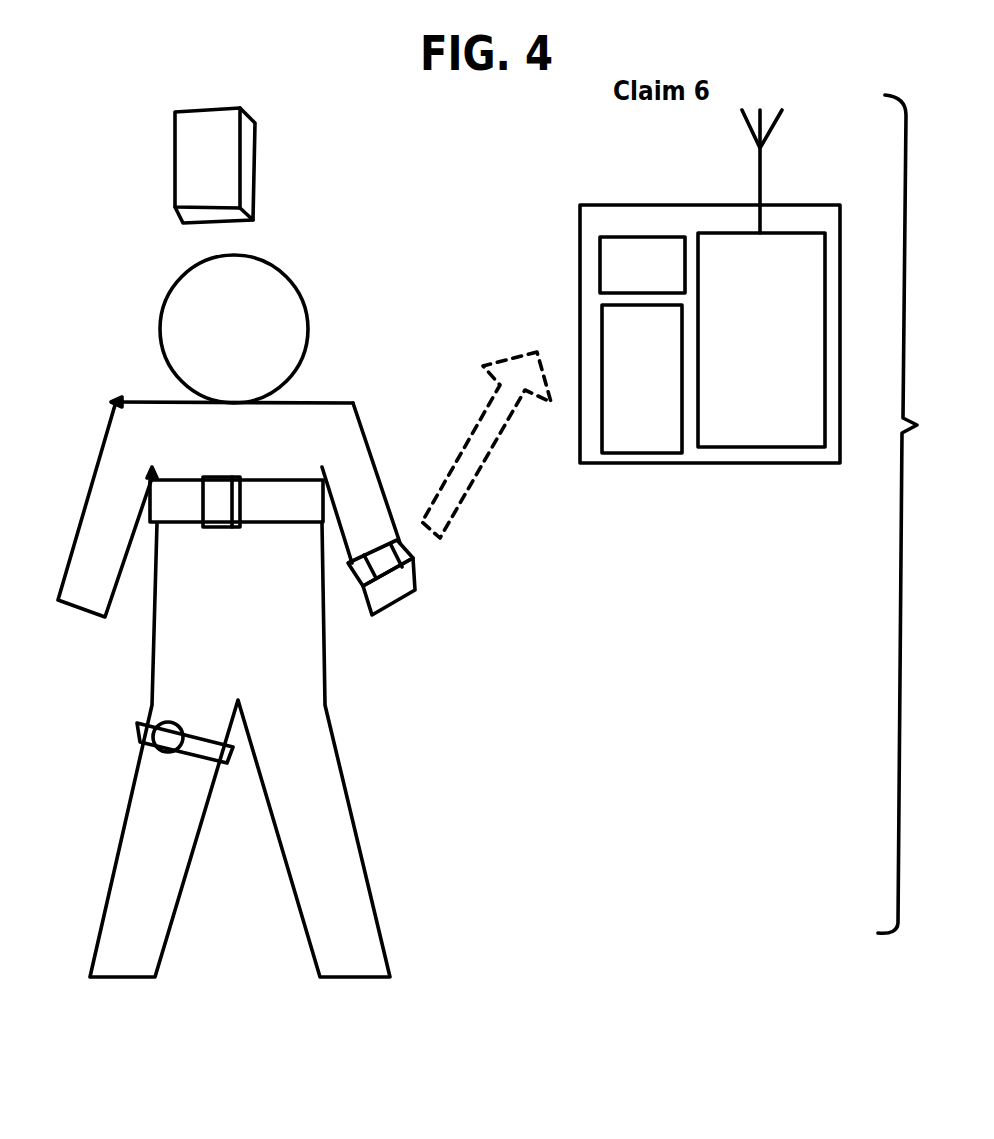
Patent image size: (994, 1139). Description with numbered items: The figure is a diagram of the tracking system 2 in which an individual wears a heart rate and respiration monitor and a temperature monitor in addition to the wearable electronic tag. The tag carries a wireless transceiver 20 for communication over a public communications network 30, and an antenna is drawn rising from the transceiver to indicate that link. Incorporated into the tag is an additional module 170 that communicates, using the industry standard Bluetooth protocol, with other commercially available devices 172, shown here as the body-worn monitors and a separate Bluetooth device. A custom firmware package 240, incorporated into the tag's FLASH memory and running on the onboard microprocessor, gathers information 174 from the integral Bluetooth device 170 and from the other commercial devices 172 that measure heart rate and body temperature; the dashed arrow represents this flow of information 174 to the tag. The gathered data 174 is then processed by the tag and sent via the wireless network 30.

The tracking system 2 is at (236, 633).
The wireless transceiver 20 is at (223, 466).
The public communications network 30 is at (780, 171).
The additional Bluetooth module 170 is at (642, 298).
The other commercially available devices 172 is at (247, 146).
The information 174 is at (486, 424).
The custom firmware package 240 is at (701, 526).